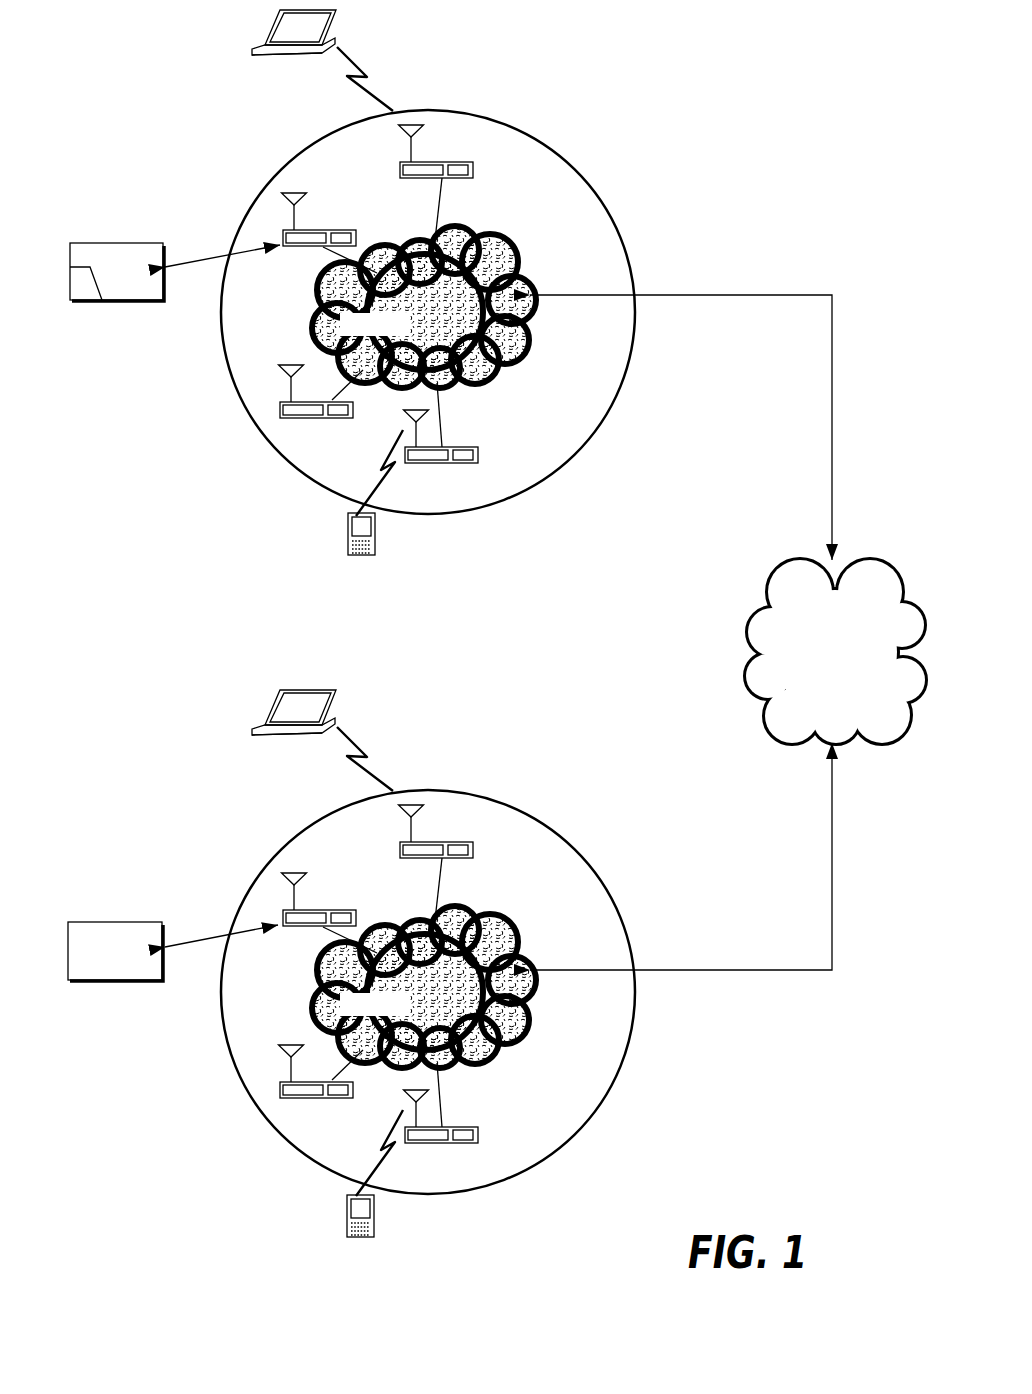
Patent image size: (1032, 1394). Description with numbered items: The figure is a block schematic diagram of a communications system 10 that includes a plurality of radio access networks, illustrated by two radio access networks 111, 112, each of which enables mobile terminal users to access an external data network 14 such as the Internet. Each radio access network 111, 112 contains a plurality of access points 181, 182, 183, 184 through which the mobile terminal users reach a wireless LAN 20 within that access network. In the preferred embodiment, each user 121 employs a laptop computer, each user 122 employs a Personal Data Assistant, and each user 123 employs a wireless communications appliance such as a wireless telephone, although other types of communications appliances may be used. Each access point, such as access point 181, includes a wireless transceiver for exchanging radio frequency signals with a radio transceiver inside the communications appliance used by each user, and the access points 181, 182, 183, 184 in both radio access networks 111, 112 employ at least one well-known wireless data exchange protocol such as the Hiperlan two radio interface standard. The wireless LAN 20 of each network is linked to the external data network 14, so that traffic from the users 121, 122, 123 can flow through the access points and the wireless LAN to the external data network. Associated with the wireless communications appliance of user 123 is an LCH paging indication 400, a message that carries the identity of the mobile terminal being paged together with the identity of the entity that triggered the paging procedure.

The communications system 10 is at (150, 537).
The radio access network 111 is at (575, 168).
The radio access network 112 is at (543, 825).
The user 121 is at (338, 31).
The user 122 is at (376, 540).
The user 123 is at (135, 243).
The external data network 14 is at (750, 607).
The access point 181 is at (441, 162).
The access point 182 is at (457, 447).
The access point 183 is at (328, 910).
The access point 184 is at (317, 1082).
The wireless LAN 20 is at (512, 352).
The LCH paging indication 400 is at (87, 295).